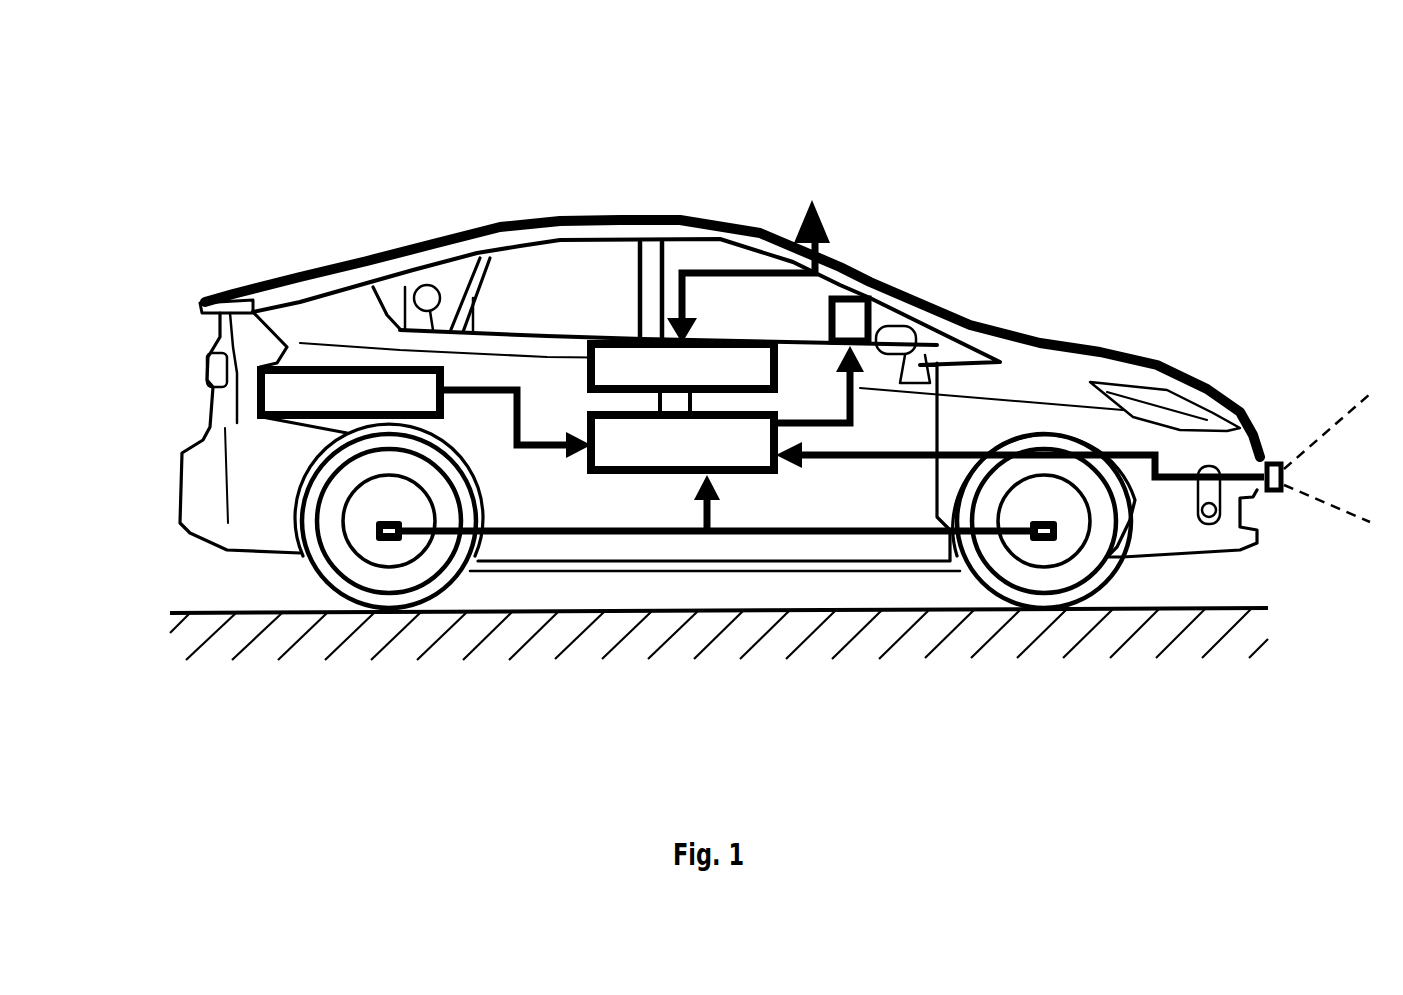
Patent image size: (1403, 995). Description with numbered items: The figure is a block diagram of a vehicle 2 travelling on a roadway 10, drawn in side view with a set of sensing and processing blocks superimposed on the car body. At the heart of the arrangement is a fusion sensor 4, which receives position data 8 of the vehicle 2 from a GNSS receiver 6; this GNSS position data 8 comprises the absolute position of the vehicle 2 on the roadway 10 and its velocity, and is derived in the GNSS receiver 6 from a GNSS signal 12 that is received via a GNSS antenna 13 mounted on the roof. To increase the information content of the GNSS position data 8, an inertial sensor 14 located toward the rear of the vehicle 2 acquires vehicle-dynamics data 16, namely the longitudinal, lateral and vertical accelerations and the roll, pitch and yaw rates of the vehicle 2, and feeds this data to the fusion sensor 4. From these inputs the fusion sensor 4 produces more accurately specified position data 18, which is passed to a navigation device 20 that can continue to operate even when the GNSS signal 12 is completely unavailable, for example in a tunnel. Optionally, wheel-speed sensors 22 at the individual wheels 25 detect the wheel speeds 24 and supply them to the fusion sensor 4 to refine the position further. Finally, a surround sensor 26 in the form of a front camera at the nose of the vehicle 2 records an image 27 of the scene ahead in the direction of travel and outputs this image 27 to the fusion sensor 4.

The vehicle 2 is at (200, 132).
The fusion sensor 4 is at (622, 476).
The GNSS receiver 6 is at (633, 342).
The position data 8 is at (667, 403).
The roadway 10 is at (243, 637).
The GNSS signal 12 is at (742, 270).
The GNSS antenna 13 is at (820, 200).
The inertial sensor 14 is at (256, 391).
The vehicle-dynamics data 16 is at (528, 449).
The more accurately specified position data 18 is at (857, 403).
The navigation device 20 is at (860, 278).
The wheel-speed sensors 22 is at (392, 545).
The wheel speeds 24 is at (718, 486).
The wheels 25 is at (322, 556).
The surround sensor 26 is at (1272, 460).
The image 27 is at (960, 452).